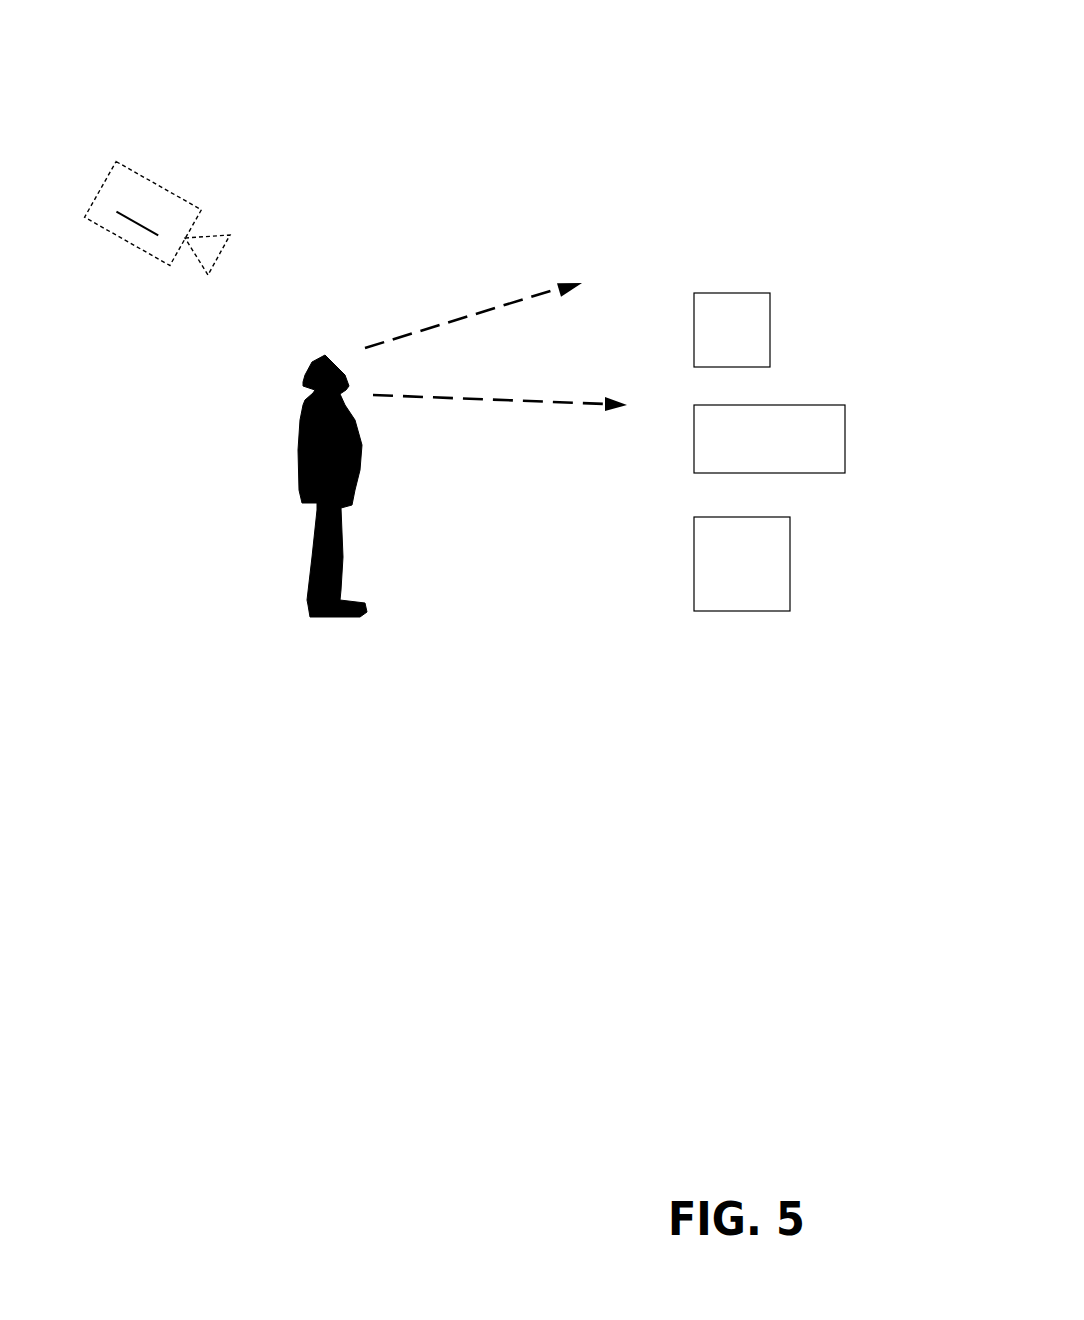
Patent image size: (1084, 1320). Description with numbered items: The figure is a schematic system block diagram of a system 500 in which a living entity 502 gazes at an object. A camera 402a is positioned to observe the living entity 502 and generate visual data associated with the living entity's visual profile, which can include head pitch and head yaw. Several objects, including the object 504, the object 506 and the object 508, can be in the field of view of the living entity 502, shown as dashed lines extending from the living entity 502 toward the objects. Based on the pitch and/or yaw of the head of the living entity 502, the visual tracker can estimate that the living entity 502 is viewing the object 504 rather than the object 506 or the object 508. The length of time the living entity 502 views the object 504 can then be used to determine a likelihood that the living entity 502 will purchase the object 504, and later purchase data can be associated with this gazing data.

The system 500 is at (823, 31).
The camera 402a is at (157, 218).
The living entity 502 is at (333, 642).
The object 504 is at (714, 343).
The object 506 is at (752, 451).
The object 508 is at (724, 576).